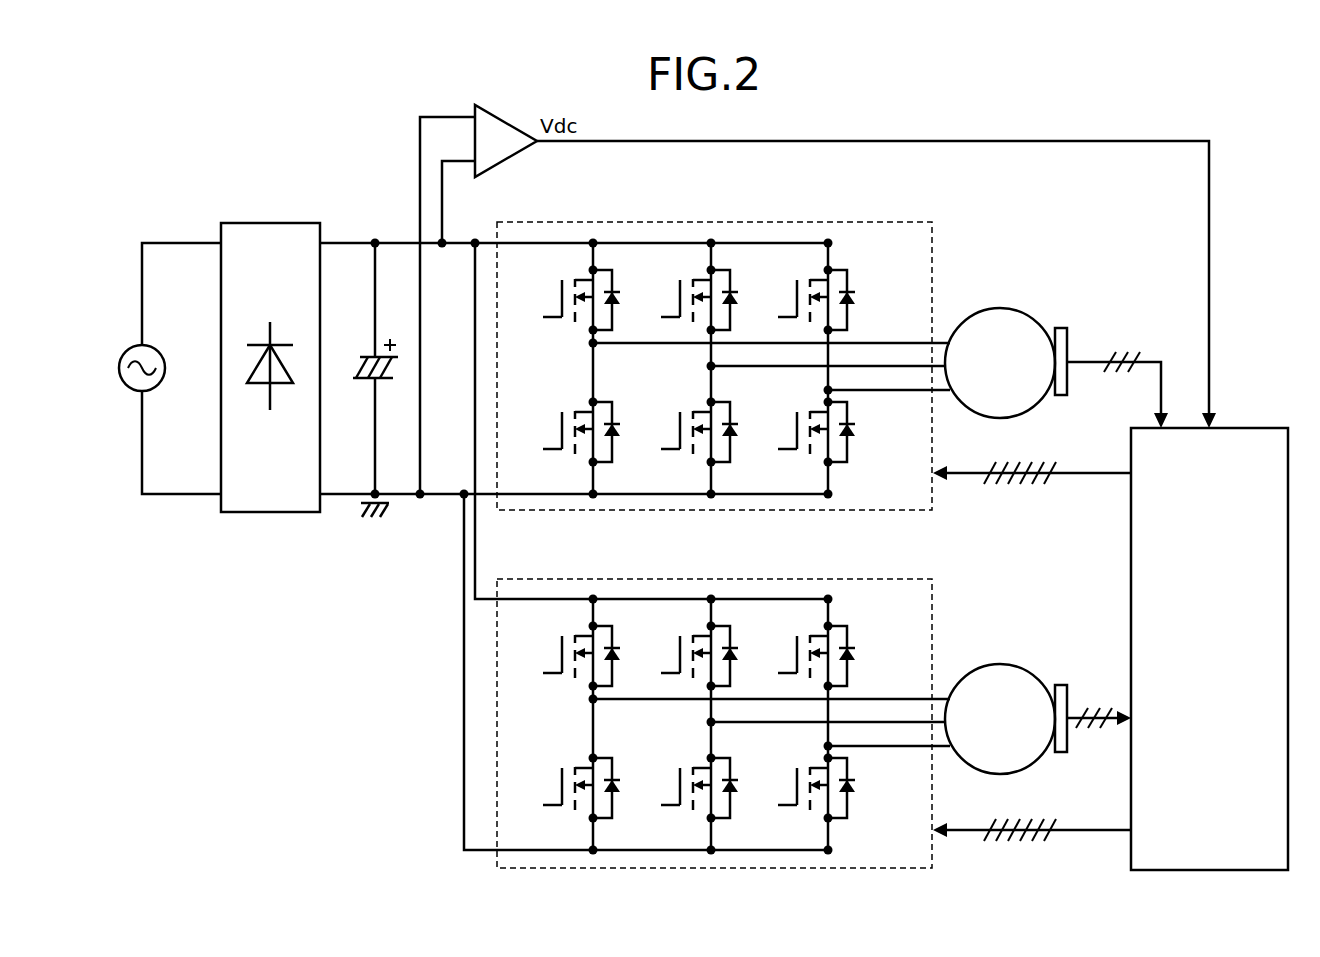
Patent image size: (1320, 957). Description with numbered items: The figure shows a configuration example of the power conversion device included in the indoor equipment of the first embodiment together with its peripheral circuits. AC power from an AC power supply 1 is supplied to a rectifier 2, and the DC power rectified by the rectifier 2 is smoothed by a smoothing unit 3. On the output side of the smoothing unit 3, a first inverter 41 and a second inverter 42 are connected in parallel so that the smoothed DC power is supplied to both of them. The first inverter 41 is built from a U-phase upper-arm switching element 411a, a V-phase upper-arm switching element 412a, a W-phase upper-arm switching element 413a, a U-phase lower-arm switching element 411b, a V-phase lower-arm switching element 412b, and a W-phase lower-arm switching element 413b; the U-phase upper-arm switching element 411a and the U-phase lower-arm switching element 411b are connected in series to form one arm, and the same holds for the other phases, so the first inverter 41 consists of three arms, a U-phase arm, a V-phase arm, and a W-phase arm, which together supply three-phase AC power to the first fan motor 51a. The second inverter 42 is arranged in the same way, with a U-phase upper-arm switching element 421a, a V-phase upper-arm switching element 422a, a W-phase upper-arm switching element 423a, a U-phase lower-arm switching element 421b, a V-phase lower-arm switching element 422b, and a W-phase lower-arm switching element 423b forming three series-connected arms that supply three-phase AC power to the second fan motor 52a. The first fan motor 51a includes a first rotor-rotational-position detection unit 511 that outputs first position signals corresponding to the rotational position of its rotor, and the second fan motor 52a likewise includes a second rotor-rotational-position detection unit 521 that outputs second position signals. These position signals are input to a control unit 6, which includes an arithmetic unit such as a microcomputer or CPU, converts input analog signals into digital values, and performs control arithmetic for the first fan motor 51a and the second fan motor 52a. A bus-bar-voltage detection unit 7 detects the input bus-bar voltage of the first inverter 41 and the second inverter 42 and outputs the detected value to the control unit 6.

The AC power supply 1 is at (126, 351).
The rectifier 2 is at (265, 223).
The smoothing unit 3 is at (359, 355).
The bus-bar-voltage detection unit 7 is at (498, 118).
The first inverter 41 is at (523, 223).
The second inverter 42 is at (523, 578).
The U-phase upper-arm switching element 411a is at (566, 282).
The V-phase upper-arm switching element 412a is at (684, 282).
The W-phase upper-arm switching element 413a is at (801, 282).
The U-phase lower-arm switching element 411b is at (566, 414).
The V-phase lower-arm switching element 412b is at (684, 414).
The W-phase lower-arm switching element 413b is at (801, 414).
The U-phase upper-arm switching element 421a is at (566, 638).
The V-phase upper-arm switching element 422a is at (684, 638).
The W-phase upper-arm switching element 423a is at (801, 638).
The U-phase lower-arm switching element 421b is at (566, 770).
The V-phase lower-arm switching element 422b is at (684, 770).
The W-phase lower-arm switching element 423b is at (801, 770).
The first fan motor 51a is at (1007, 309).
The first rotor-rotational-position detection unit 511 is at (1059, 328).
The second fan motor 52a is at (1007, 665).
The second rotor-rotational-position detection unit 521 is at (1058, 683).
The control unit 6 is at (1245, 428).